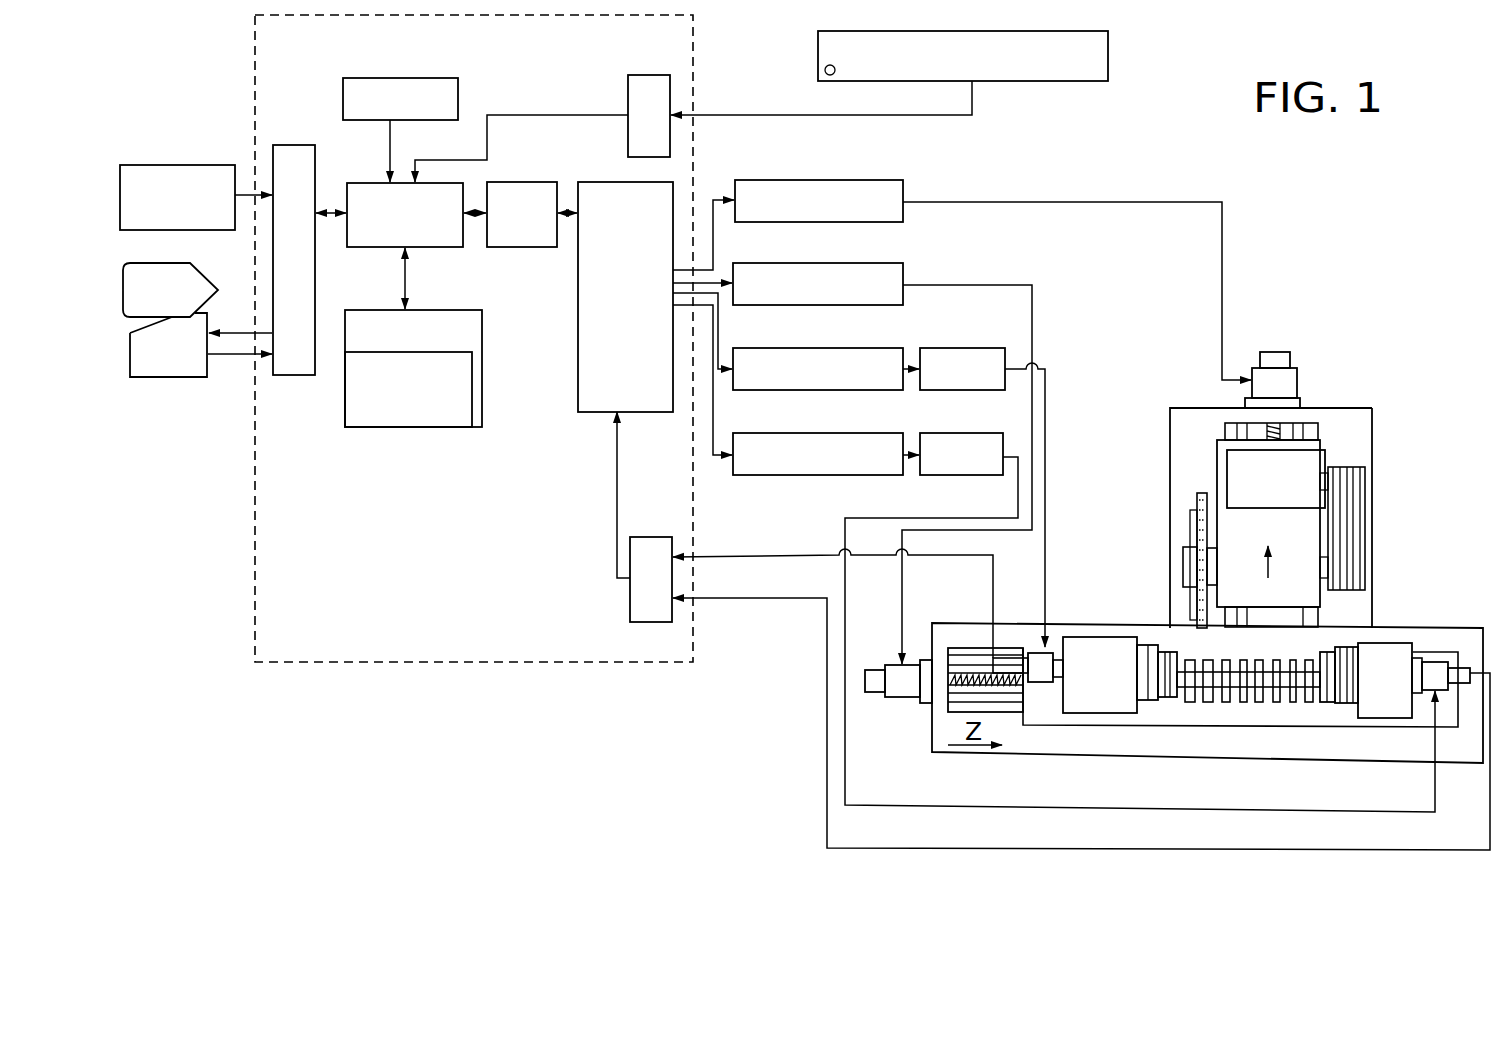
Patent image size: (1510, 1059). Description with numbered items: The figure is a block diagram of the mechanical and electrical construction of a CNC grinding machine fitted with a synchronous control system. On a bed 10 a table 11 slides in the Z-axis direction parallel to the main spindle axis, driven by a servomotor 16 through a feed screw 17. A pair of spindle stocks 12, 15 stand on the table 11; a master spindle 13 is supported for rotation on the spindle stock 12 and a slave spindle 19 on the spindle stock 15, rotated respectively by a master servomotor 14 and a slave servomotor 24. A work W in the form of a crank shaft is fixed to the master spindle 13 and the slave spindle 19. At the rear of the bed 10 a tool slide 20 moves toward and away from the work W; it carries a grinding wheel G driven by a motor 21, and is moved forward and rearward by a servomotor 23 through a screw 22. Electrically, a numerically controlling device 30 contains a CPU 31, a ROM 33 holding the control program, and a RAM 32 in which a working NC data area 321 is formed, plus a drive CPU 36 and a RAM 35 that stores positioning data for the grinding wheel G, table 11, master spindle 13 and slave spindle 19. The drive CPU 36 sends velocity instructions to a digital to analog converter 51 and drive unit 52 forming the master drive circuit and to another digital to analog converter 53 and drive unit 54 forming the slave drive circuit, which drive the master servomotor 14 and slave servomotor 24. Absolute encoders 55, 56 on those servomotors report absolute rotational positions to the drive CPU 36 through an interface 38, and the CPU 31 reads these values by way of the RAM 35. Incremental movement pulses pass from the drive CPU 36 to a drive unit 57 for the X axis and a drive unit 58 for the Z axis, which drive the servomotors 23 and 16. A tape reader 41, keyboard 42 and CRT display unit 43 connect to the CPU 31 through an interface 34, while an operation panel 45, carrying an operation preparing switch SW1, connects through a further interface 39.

The bed 10 is at (1470, 628).
The table 11 is at (1448, 728).
The spindle stock 12 is at (1097, 713).
The master spindle 13 is at (1167, 700).
The master servomotor 14 is at (1045, 683).
The spindle stock 15 is at (1378, 718).
The servomotor 16 is at (900, 697).
The feed screw 17 is at (970, 665).
The slave spindle 19 is at (1325, 705).
The tool slide 20 is at (1315, 597).
The motor 21 is at (1322, 462).
The screw 22 is at (1283, 432).
The servomotor 23 is at (1297, 382).
The slave servomotor 24 is at (1433, 662).
The numerically controlling device 30 is at (252, 17).
The CPU 31 is at (347, 183).
The RAM 32 is at (347, 310).
The working NC data area 321 is at (345, 412).
The ROM 33 is at (345, 78).
The interface 34 is at (273, 145).
The RAM 35 is at (489, 182).
The drive CPU 36 is at (580, 182).
The interface 38 is at (632, 537).
The interface 39 is at (630, 75).
The tape reader 41 is at (122, 165).
The keyboard 42 is at (133, 377).
The CRT display unit 43 is at (128, 266).
The operation panel 45 is at (1108, 35).
The digital to analog converter 51 is at (735, 348).
The drive unit 52 is at (920, 348).
The digital to analog converter 53 is at (735, 433).
The drive unit 54 is at (920, 433).
The absolute encoder 55 is at (1013, 658).
The absolute encoder 56 is at (1485, 628).
The drive unit 57 is at (737, 180).
The drive unit 58 is at (734, 263).
The operation preparing switch SW1 is at (825, 70).
The work W is at (1225, 705).
The grinding wheel G is at (1197, 640).